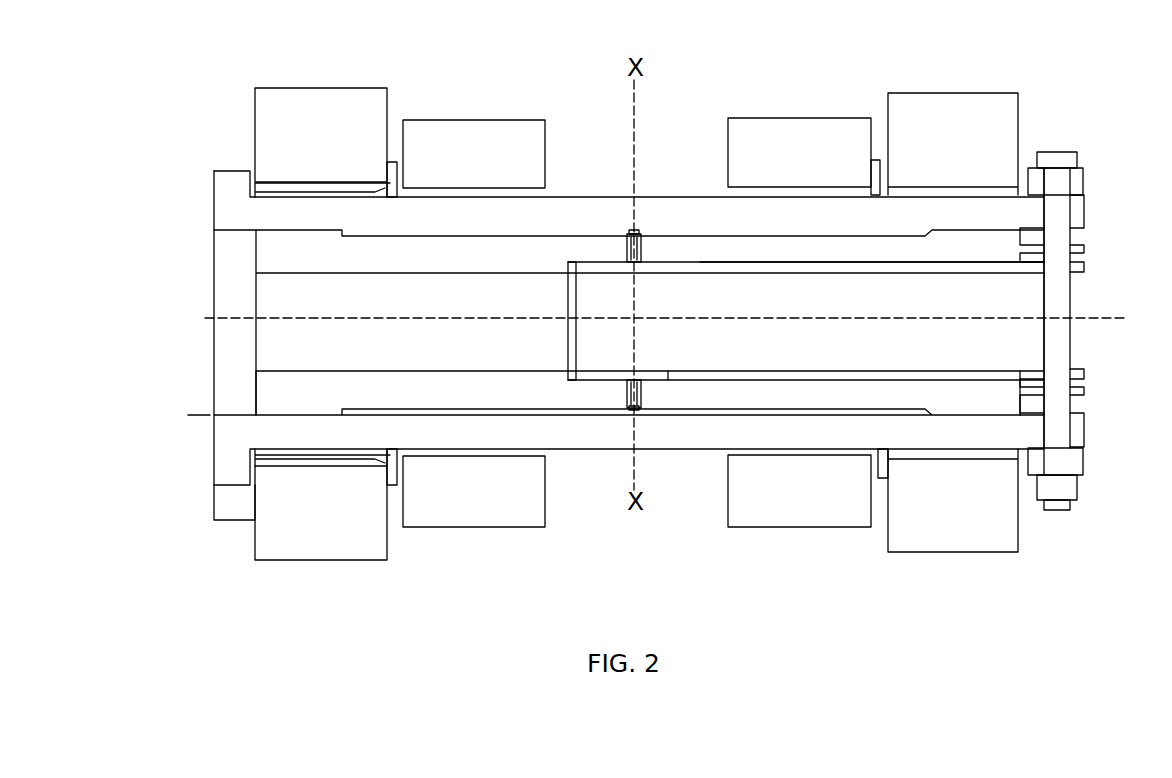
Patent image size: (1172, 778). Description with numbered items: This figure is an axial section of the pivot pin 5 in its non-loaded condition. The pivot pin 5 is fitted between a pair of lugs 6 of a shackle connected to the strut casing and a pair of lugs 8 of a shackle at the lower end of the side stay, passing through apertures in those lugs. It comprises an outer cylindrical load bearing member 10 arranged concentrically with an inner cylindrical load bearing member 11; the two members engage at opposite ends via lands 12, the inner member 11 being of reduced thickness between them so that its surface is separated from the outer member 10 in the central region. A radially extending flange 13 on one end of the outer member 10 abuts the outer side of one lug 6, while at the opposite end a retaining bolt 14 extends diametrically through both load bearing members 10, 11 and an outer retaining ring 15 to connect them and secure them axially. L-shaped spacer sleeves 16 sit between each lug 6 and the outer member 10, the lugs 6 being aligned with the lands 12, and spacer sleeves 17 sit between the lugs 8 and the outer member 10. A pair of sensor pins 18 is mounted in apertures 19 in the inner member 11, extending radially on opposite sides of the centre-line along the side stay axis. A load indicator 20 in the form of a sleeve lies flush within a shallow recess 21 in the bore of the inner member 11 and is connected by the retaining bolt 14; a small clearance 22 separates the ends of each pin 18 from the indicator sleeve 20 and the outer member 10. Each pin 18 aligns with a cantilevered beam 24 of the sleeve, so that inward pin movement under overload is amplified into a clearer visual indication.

The pivot pin 5 is at (170, 420).
The lugs 6 is at (317, 88).
The lugs 8 is at (513, 118).
The outer cylindrical load bearing member 10 is at (213, 213).
The inner cylindrical load bearing member 11 is at (257, 254).
The lands 12 is at (277, 402).
The radially extending flange 13 is at (212, 470).
The retaining bolt 14 is at (1057, 302).
The outer retaining ring 15 is at (1085, 183).
The L-shaped spacer sleeves 16 is at (267, 185).
The spacer sleeves 17 is at (455, 192).
The sensor pins 18 is at (631, 252).
The apertures 19 is at (643, 248).
The load indicator 20 is at (813, 275).
The shallow recess 21 is at (940, 262).
The clearance 22 is at (638, 228).
The cantilevered beam 24 is at (615, 365).